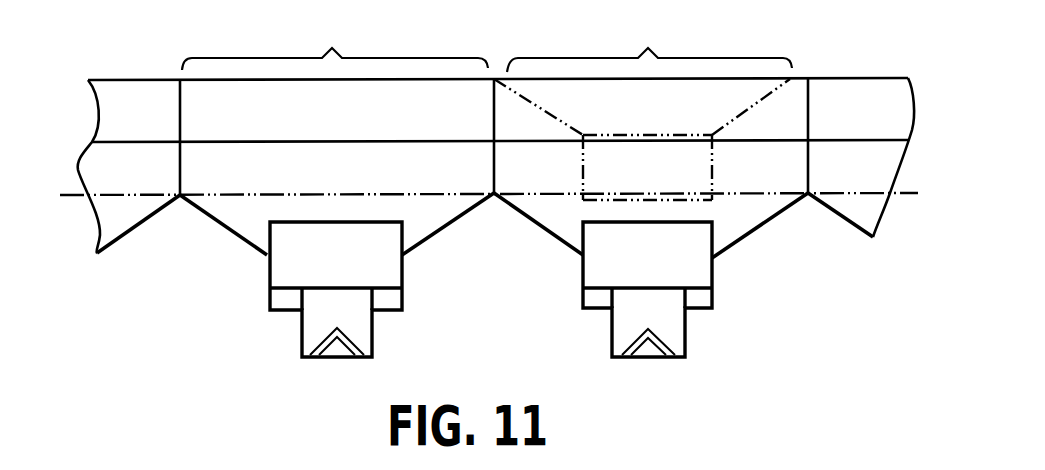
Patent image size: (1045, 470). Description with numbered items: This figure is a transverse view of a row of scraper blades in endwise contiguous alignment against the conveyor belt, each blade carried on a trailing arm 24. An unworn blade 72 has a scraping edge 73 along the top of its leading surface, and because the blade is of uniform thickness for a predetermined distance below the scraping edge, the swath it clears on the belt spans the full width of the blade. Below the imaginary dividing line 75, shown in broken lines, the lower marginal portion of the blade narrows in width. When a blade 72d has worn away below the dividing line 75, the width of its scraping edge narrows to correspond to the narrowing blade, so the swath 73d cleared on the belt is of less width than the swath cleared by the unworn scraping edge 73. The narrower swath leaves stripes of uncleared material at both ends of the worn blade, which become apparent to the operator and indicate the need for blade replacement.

The trailing arm 24 is at (374, 321).
The blade 72 is at (228, 210).
The worn blade 72d is at (550, 102).
The scraping edge 73 is at (335, 39).
The narrowed swath 73d is at (649, 103).
The dividing line 75 is at (553, 195).